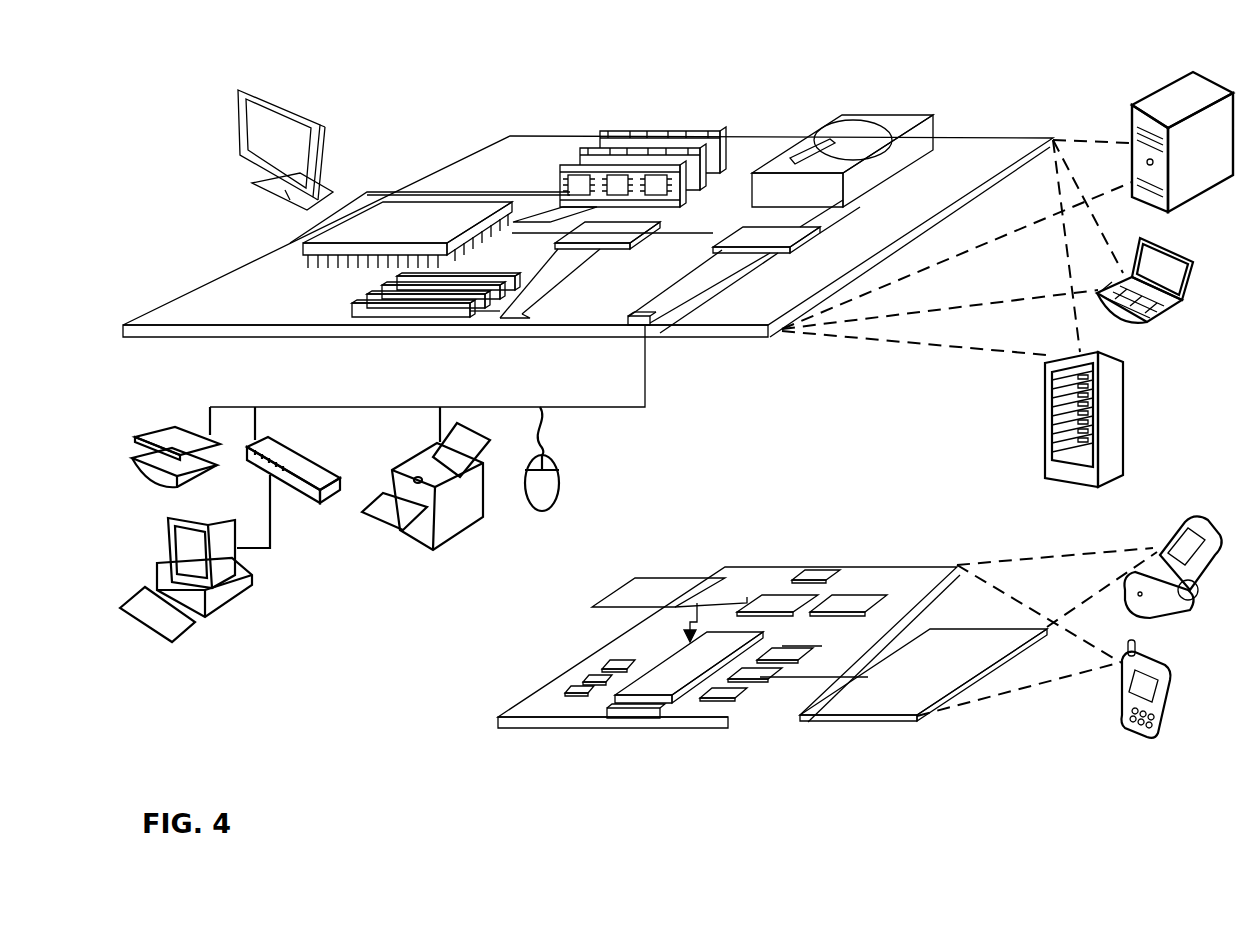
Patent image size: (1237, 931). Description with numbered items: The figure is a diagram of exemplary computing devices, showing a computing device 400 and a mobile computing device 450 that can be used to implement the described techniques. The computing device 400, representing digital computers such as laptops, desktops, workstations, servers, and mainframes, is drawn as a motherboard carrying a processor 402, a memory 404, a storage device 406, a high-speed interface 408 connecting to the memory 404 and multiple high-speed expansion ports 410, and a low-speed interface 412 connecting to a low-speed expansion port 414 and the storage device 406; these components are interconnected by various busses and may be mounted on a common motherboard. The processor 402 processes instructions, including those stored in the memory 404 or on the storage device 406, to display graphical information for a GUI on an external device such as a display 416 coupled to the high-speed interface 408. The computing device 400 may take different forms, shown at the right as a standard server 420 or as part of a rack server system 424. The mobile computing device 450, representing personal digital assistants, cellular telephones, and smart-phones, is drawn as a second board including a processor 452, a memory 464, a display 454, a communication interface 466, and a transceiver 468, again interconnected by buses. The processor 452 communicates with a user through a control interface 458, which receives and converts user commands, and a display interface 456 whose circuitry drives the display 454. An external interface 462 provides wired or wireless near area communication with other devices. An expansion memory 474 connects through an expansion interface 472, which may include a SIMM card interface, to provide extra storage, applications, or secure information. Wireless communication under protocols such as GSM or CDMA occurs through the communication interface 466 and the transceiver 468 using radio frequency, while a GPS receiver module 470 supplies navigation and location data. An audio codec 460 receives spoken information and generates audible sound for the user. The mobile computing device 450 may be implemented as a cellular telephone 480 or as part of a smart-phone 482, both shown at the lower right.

The computing device 400 is at (423, 106).
The processor 402 is at (305, 250).
The memory 404 is at (612, 128).
The storage device 406 is at (830, 117).
The high-speed interface 408 is at (587, 233).
The high-speed expansion ports 410 is at (377, 298).
The low-speed interface 412 is at (747, 233).
The low-speed expansion port 414 is at (652, 326).
The display 416 is at (240, 90).
The standard server 420 is at (1130, 120).
The rack server system 424 is at (1045, 445).
The mobile computing device 450 is at (474, 728).
The processor 452 is at (664, 688).
The display 454 is at (885, 703).
The display interface 456 is at (727, 700).
The control interface 458 is at (760, 680).
The audio codec 460 is at (784, 654).
The external interface 462 is at (635, 719).
The memory 464 is at (578, 688).
The communication interface 466 is at (775, 600).
The transceiver 468 is at (850, 598).
The GPS receiver module 470 is at (818, 568).
The expansion interface 472 is at (706, 577).
The expansion memory 474 is at (635, 580).
The cellular telephone 480 is at (1177, 498).
The smart-phone 482 is at (1122, 693).